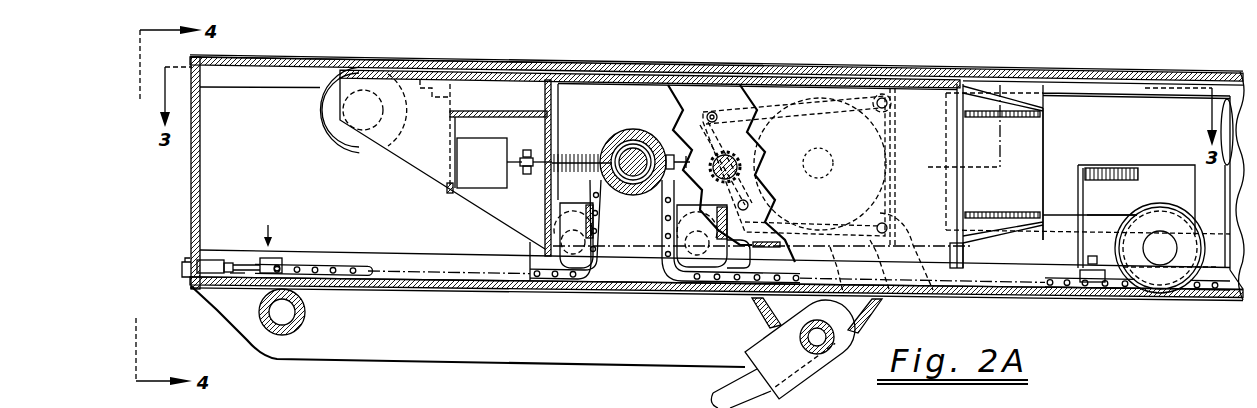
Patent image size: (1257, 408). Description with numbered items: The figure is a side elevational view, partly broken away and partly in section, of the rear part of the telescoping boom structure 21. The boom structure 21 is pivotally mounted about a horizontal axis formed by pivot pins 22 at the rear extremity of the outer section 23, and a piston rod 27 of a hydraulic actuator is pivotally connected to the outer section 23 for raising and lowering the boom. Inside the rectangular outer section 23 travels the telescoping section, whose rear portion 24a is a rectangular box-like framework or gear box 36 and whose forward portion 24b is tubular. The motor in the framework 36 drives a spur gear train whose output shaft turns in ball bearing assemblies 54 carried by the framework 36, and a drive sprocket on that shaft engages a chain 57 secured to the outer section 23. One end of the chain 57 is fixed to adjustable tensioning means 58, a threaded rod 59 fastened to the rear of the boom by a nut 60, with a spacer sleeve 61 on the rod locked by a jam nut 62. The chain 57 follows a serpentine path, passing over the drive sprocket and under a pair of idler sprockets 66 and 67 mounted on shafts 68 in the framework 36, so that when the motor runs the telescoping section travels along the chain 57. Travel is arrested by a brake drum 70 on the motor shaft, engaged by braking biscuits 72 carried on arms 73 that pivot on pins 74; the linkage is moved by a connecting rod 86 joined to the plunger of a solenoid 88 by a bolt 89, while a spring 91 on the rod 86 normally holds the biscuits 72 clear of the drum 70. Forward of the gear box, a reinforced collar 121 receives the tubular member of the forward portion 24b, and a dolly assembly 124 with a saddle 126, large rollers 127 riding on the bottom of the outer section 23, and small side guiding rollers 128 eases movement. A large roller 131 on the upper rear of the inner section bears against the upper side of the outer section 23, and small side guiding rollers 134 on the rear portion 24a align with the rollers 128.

The boom structure 21 is at (1056, 42).
The pivot pins 22 is at (282, 313).
The outer section 23 is at (403, 57).
The rear portion 24a is at (655, 78).
The forward portion 24b is at (1124, 98).
The piston rod 27 is at (725, 378).
The framework or gear box 36 is at (490, 110).
The ball bearing assemblies 54 is at (621, 138).
The chain 57 is at (343, 265).
The adjustable tensioning means 58 is at (269, 227).
The threaded rod 59 is at (243, 263).
The nut 60 is at (182, 290).
The spacer sleeve 61 is at (210, 261).
The jam nut 62 is at (238, 277).
The idler sprocket 66 is at (531, 284).
The idler sprocket 67 is at (738, 270).
The shafts 68 is at (591, 286).
The brake drum 70 is at (880, 128).
The braking shoes or biscuits 72 is at (801, 92).
The arms 73 is at (855, 86).
The pins 74 is at (888, 82).
The connecting rod 86 is at (531, 150).
The solenoid 88 is at (477, 181).
The bolt 89 is at (528, 175).
The spring 91 is at (588, 152).
The collar 121 is at (1035, 146).
The dolly assembly 124 is at (1232, 300).
The saddle 126 is at (1162, 176).
The large rollers 127 is at (1170, 278).
The side guiding rollers 128 is at (1105, 273).
The roller 131 is at (322, 107).
The side guiding rollers 134 is at (453, 76).